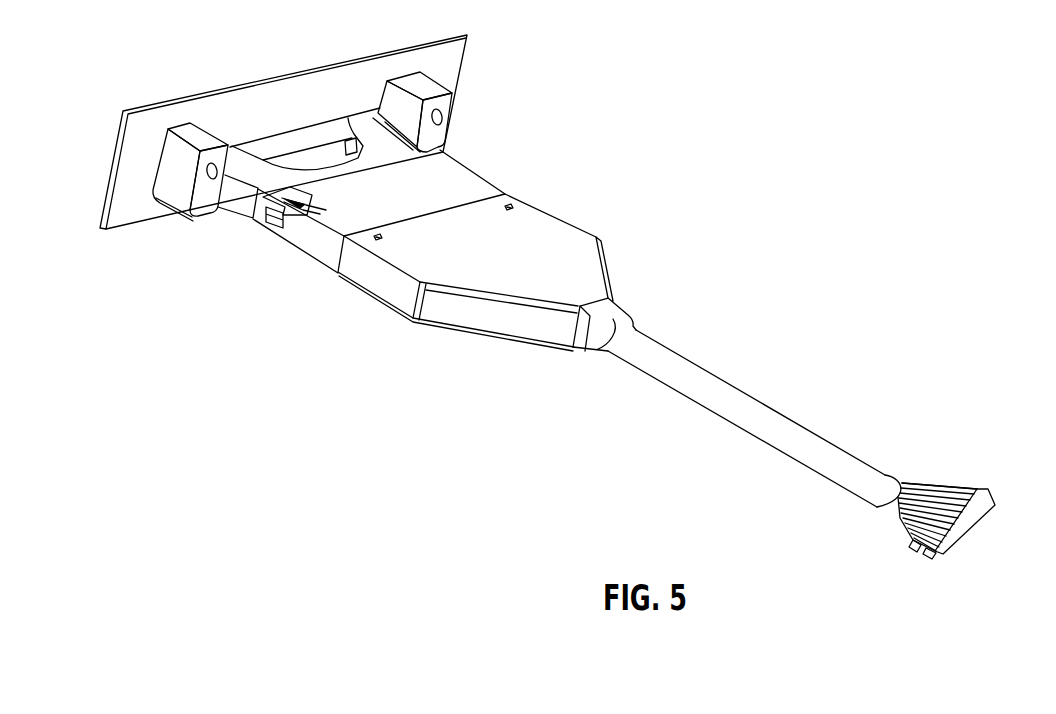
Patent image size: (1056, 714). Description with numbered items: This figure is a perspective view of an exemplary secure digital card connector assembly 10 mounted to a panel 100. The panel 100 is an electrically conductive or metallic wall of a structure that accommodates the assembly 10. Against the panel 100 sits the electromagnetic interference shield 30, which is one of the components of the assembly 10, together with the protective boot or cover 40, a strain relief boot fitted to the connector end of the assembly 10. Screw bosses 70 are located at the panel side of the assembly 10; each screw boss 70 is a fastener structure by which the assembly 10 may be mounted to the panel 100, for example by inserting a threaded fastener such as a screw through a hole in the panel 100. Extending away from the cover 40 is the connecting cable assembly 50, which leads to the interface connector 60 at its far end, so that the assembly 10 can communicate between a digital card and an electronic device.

The secure digital card connector assembly 10 is at (266, 342).
The electromagnetic interference shield 30 is at (453, 173).
The protective boot or cover 40 is at (537, 220).
The connecting cable assembly 50 is at (702, 378).
The interface connector 60 is at (990, 508).
The screw boss 70 is at (440, 130).
The panel 100 is at (443, 62).